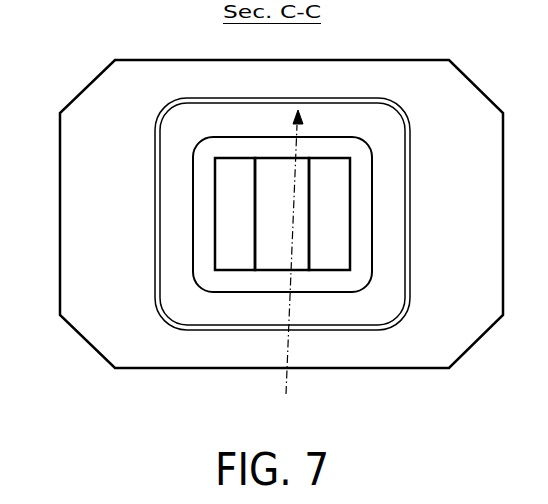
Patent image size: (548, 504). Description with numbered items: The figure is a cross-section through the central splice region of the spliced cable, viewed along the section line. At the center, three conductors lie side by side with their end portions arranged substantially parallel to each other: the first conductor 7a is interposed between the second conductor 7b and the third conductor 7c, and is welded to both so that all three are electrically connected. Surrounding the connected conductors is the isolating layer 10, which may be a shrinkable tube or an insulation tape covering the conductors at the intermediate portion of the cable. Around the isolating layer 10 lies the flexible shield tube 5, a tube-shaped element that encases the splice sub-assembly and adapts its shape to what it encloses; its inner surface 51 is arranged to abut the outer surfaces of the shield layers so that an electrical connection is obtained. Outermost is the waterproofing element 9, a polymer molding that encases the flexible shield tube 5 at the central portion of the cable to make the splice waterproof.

The flexible shield tube 5 is at (155, 228).
The first conductor 7a is at (290, 177).
The second conductor 7b is at (232, 237).
The third conductor 7c is at (338, 242).
The waterproofing element 9 is at (452, 146).
The isolating layer 10 is at (333, 147).
The inner surface 51 is at (286, 264).